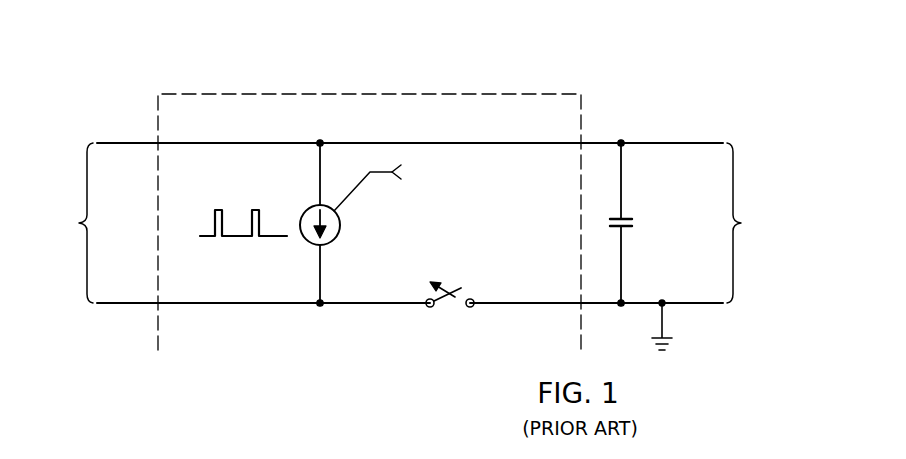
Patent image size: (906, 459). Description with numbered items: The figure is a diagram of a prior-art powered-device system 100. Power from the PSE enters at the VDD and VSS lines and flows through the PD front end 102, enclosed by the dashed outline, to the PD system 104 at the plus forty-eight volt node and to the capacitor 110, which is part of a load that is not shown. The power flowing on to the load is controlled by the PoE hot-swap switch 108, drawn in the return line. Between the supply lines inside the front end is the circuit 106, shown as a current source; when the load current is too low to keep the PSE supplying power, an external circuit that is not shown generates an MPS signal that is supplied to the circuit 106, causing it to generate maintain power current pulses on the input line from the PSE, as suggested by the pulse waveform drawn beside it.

The system 100 is at (691, 62).
The PD front end 102 is at (355, 93).
The PD system 104 is at (601, 142).
The circuit 106 is at (306, 210).
The PoE hot-swap switch 108 is at (458, 290).
The capacitor 110 is at (631, 224).